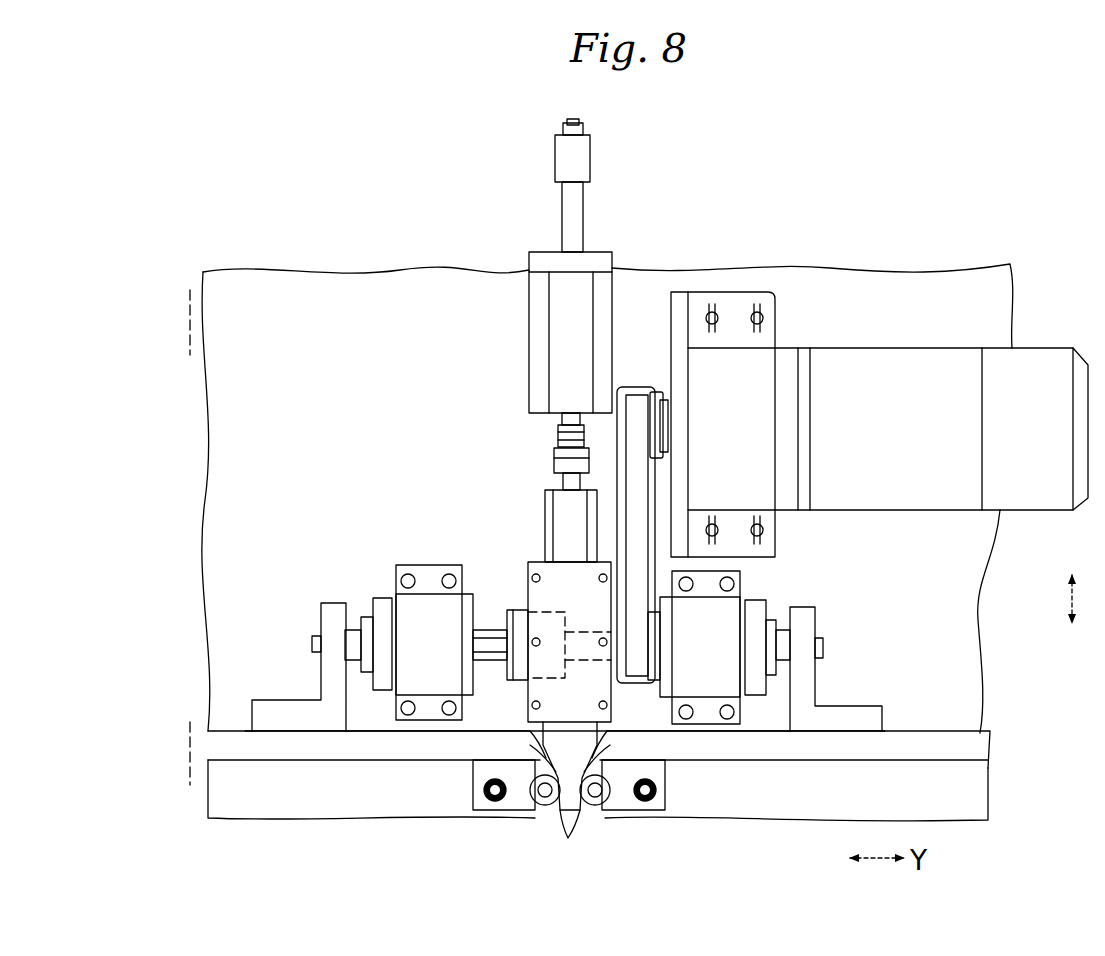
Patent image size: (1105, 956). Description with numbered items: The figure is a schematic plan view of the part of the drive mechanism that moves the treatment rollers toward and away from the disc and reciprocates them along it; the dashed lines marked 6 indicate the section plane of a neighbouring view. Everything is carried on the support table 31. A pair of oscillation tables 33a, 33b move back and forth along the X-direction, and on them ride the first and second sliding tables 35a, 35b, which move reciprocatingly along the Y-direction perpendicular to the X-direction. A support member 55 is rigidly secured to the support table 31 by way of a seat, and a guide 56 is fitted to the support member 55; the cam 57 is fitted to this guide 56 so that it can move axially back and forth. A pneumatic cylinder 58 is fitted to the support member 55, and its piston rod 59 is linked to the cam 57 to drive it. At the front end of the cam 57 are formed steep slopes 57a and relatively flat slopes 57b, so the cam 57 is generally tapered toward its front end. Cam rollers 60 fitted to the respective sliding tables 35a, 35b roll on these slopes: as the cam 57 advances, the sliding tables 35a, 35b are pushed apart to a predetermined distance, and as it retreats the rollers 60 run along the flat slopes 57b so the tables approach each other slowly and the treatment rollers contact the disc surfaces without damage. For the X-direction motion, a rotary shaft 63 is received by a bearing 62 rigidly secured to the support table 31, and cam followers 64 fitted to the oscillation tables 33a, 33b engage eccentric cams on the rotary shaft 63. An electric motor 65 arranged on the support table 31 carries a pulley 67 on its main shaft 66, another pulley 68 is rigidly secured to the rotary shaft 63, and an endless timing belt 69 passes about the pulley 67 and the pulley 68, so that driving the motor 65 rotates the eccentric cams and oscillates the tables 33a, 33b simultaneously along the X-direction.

The section line of FIG. 6 is at (186, 322).
The support table 31 is at (962, 640).
The oscillation table 33a is at (270, 742).
The oscillation table 33b is at (972, 748).
The first sliding table 35a is at (216, 800).
The second sliding table 35b is at (975, 800).
The support member 55 is at (548, 438).
The guide 56 is at (540, 570).
The cam 57 is at (605, 745).
The steep slope 57a is at (540, 762).
The flat slope 57b is at (568, 822).
The pneumatic cylinder 58 is at (556, 312).
The piston rod 59 is at (565, 425).
The cam roller 60 is at (543, 805).
The bearing 62 is at (425, 598).
The rotary shaft 63 is at (493, 625).
The cam follower 64 is at (323, 610).
The electric motor 65 is at (898, 500).
The main shaft 66 is at (664, 420).
The pulley 67 is at (656, 456).
The pulley 68 is at (650, 647).
The endless timing belt 69 is at (640, 495).